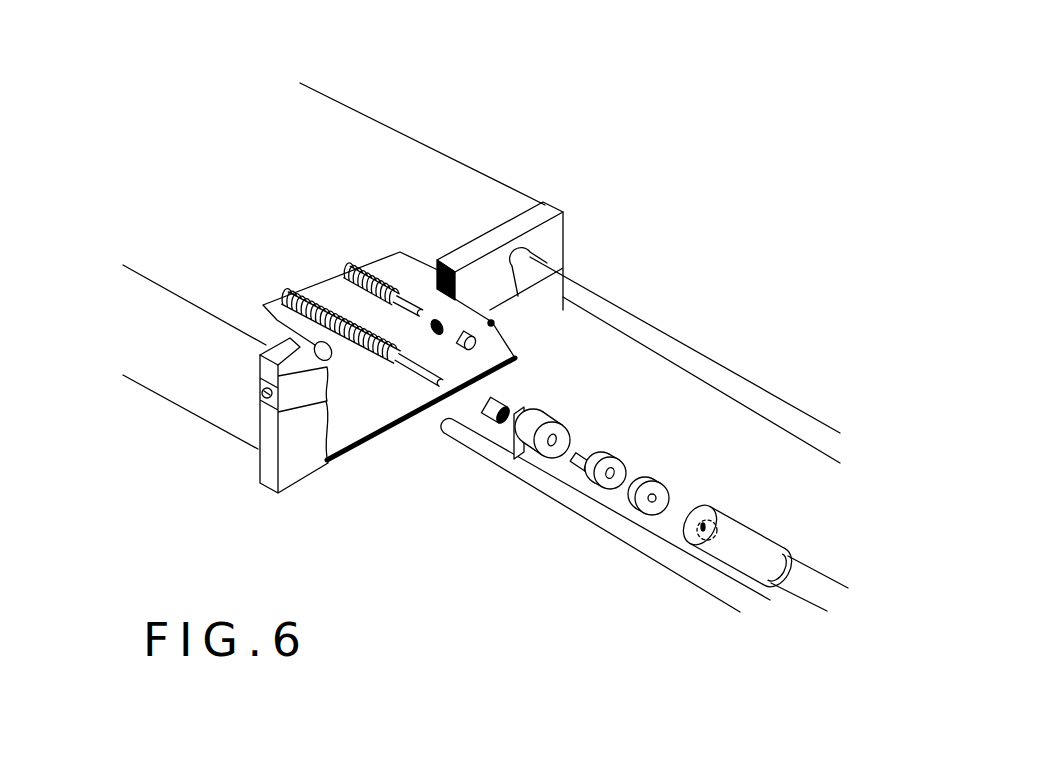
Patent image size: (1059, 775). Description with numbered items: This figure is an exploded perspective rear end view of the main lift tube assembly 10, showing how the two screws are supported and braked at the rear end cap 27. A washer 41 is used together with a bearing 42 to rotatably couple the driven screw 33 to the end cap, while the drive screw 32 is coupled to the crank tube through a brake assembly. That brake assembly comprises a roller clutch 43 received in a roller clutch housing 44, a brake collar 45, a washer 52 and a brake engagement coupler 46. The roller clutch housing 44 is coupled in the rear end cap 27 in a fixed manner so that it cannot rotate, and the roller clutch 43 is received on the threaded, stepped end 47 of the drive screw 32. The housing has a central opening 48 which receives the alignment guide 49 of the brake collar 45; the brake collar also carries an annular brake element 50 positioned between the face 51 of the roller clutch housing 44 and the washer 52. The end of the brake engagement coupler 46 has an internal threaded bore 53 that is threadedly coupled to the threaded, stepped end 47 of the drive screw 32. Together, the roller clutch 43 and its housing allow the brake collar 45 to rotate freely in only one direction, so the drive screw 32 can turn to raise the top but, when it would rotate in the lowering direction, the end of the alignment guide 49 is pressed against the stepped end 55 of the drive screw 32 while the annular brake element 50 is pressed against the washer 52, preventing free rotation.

The main lift tube assembly 10 is at (405, 162).
The rear end cap 27 is at (553, 203).
The drive screw 32 is at (355, 342).
The driven screw 33 is at (383, 274).
The washer 41 is at (535, 263).
The bearing 42 is at (493, 340).
The roller clutch 43 is at (485, 425).
The roller clutch housing 44 is at (549, 403).
The brake collar 45 is at (646, 447).
The brake engagement coupler 46 is at (747, 547).
The threaded, stepped end 47 is at (427, 380).
The central opening 48 is at (556, 443).
The alignment guide 49 is at (577, 458).
The annular brake element 50 is at (610, 491).
The face 51 is at (558, 432).
The washer 52 is at (653, 516).
The internal threaded bore 53 is at (725, 525).
The stepped end 55 is at (414, 340).